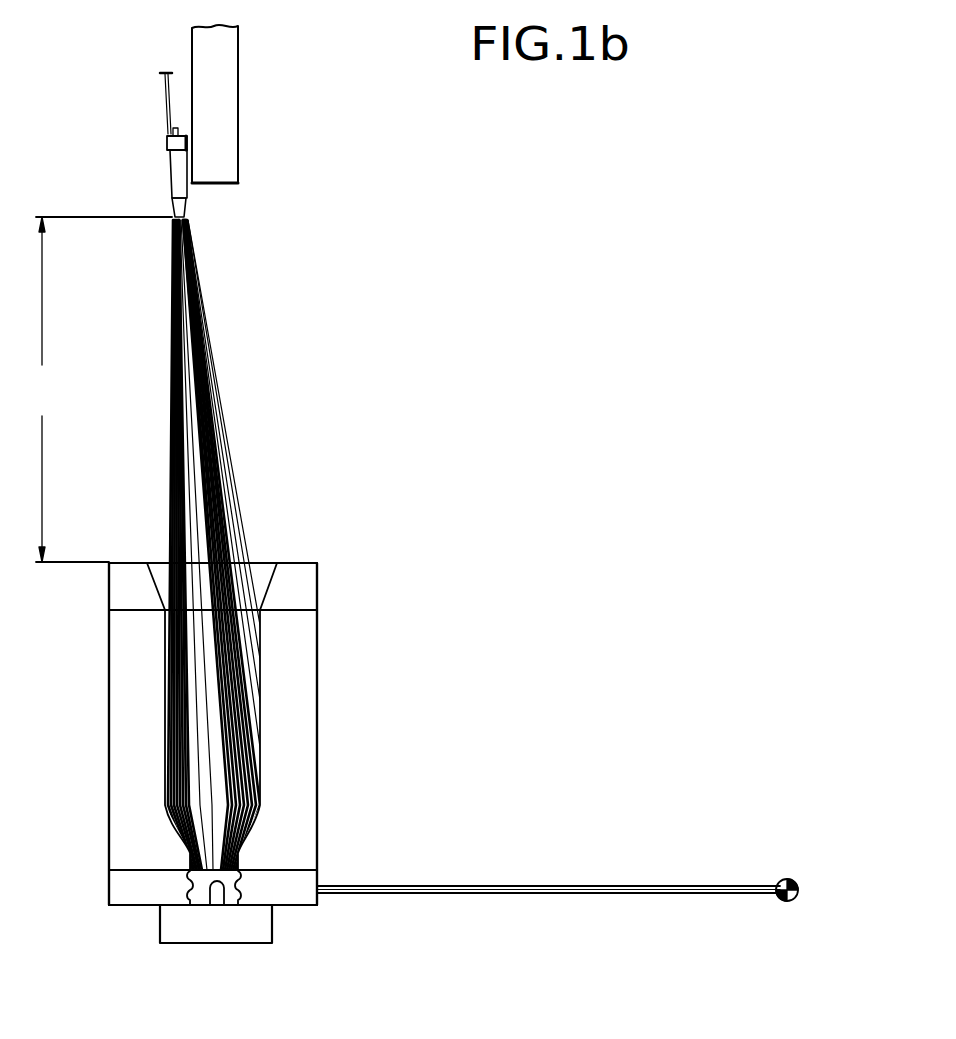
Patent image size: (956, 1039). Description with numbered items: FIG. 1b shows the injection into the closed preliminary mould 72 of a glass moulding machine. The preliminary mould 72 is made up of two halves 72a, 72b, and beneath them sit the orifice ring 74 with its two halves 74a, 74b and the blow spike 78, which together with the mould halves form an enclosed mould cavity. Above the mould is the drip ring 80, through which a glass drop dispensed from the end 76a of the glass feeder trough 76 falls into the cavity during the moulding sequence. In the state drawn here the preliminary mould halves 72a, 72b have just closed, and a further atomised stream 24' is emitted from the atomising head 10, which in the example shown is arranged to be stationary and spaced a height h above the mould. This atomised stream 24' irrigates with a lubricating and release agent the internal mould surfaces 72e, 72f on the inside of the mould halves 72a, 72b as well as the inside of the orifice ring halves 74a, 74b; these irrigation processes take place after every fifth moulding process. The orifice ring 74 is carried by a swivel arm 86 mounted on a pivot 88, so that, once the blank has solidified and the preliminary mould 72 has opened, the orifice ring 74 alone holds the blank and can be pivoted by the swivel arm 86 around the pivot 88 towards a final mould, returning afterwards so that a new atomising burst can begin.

The atomising head 10 is at (170, 176).
The further atomised stream 24' is at (236, 545).
The preliminary mould 72 is at (108, 728).
The preliminary mould half 72a is at (312, 690).
The preliminary mould half 72b is at (213, 734).
The internal mould surface 72e is at (264, 740).
The internal mould surface 72f is at (212, 740).
The orifice ring 74 is at (305, 905).
The orifice ring half 74a is at (127, 908).
The orifice ring half 74b is at (213, 888).
The glass feeder trough 76 is at (232, 50).
The end of the glass feeder trough 76a is at (222, 184).
The blow spike 78 is at (215, 898).
The drip ring 80 is at (305, 580).
The swivel arm 86 is at (515, 886).
The pivot 88 is at (787, 878).
The spray height h is at (103, 389).